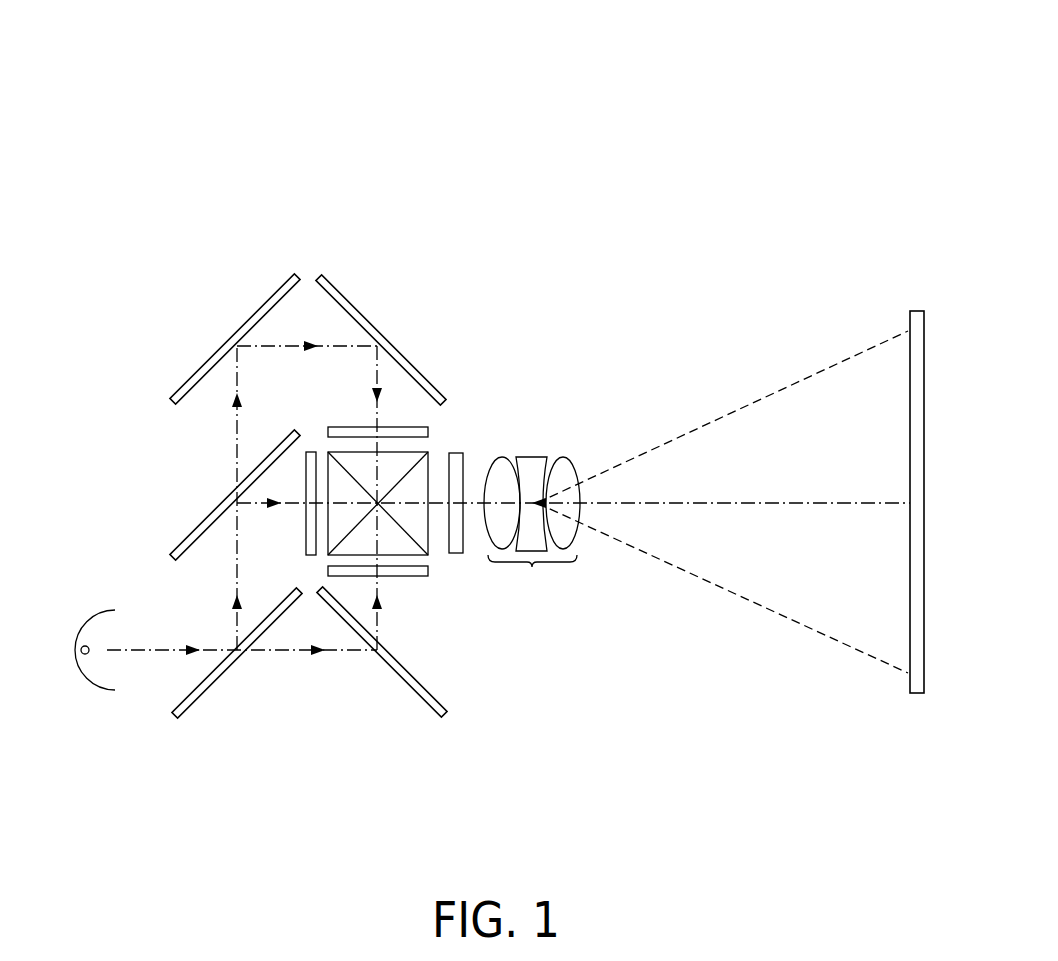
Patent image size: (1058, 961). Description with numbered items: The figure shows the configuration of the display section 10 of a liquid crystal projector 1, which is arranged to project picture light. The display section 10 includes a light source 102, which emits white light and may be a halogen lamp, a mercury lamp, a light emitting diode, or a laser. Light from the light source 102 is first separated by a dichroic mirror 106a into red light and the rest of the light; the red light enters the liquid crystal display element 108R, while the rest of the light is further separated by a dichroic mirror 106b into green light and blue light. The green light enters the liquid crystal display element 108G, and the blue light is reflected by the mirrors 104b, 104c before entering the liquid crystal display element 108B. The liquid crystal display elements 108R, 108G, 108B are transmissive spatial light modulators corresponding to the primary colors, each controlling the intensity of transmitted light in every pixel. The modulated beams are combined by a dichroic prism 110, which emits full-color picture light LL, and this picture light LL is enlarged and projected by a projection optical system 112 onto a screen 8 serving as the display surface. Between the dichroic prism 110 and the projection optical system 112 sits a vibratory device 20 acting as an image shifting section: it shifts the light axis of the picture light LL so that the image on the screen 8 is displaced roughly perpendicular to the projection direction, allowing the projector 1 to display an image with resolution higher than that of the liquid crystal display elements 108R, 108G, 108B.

The projector 1 is at (492, 35).
The display section 10 is at (322, 226).
The light source 102 is at (101, 689).
The dichroic mirror 106a is at (202, 697).
The dichroic mirror 106b is at (203, 522).
The mirror 104b is at (262, 308).
The mirror 104c is at (363, 308).
The liquid crystal display element 108G is at (306, 518).
The liquid crystal display element 108B is at (430, 432).
The liquid crystal display element 108R is at (355, 577).
The dichroic prism 110 is at (430, 455).
The vibratory device 20 is at (465, 533).
The picture light LL is at (437, 505).
The projection optical system 112 is at (532, 531).
The screen 8 is at (915, 695).